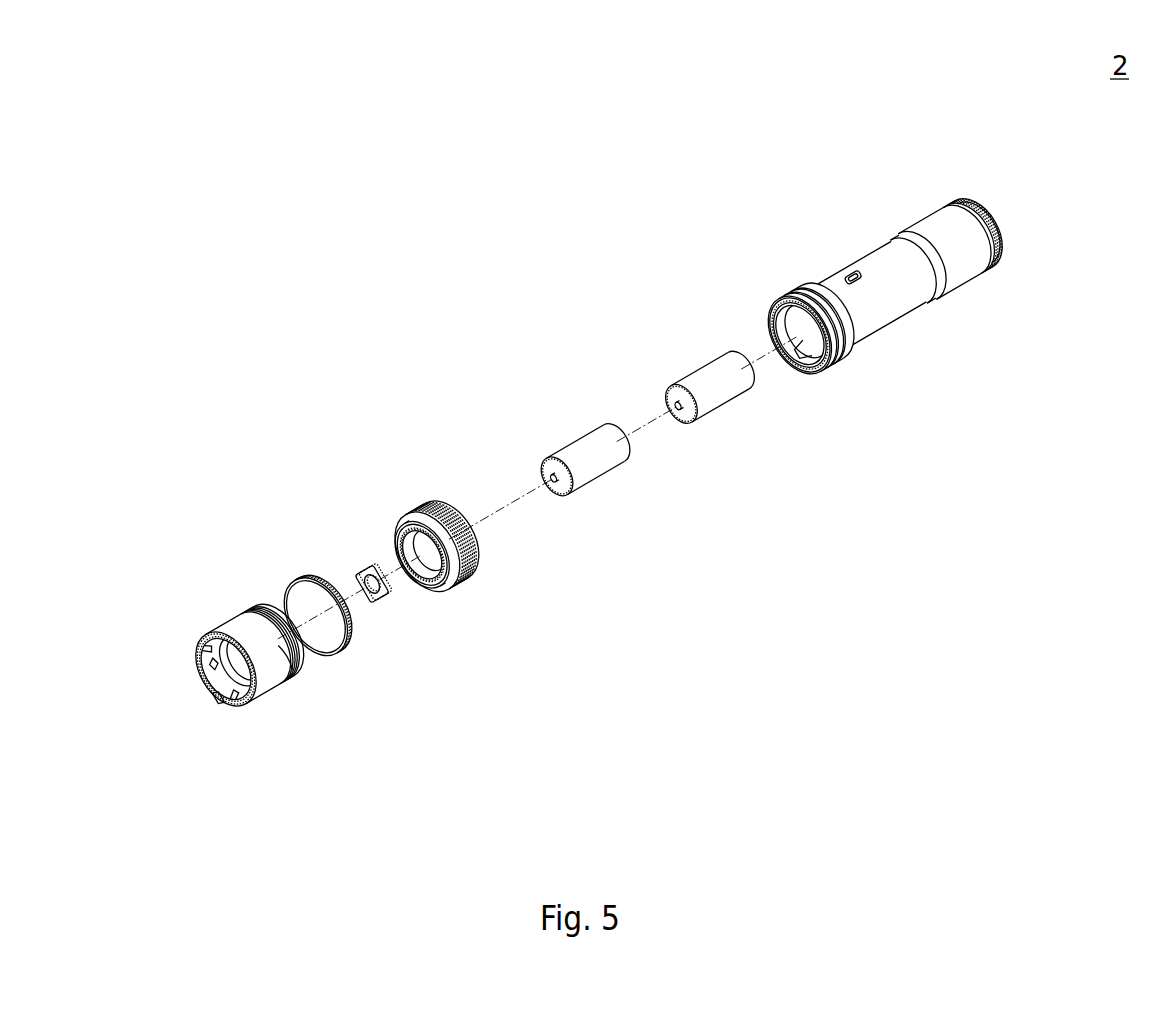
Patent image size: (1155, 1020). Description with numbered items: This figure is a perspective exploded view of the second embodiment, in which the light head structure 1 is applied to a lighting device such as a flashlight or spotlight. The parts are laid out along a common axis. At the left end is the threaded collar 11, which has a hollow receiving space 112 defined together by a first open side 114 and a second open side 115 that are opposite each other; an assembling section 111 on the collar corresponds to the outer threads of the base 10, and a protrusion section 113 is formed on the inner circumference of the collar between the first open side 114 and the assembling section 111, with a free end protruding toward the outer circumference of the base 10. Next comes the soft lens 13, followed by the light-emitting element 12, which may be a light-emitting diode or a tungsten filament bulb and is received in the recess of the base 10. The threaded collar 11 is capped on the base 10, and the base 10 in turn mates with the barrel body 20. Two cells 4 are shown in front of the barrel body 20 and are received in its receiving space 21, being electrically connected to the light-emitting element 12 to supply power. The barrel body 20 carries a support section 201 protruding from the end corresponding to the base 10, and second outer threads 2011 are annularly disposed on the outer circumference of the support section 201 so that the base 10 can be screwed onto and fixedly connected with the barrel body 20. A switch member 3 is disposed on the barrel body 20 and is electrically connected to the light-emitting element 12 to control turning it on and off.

The light head structure 1 is at (250, 467).
The threaded collar 11 is at (235, 666).
The assembling section 111 is at (204, 632).
The hollow receiving space 112 is at (215, 702).
The protrusion section 113 is at (200, 647).
The first open side 114 is at (200, 678).
The second open side 115 is at (292, 657).
The soft lens 13 is at (288, 590).
The light-emitting element 12 is at (365, 562).
The base 10 is at (417, 520).
The cells 4 is at (710, 392).
The barrel body 20 is at (855, 302).
The support section 201 is at (782, 318).
The second outer threads 2011 is at (815, 290).
The receiving space 21 is at (798, 362).
The switch member 3 is at (855, 275).